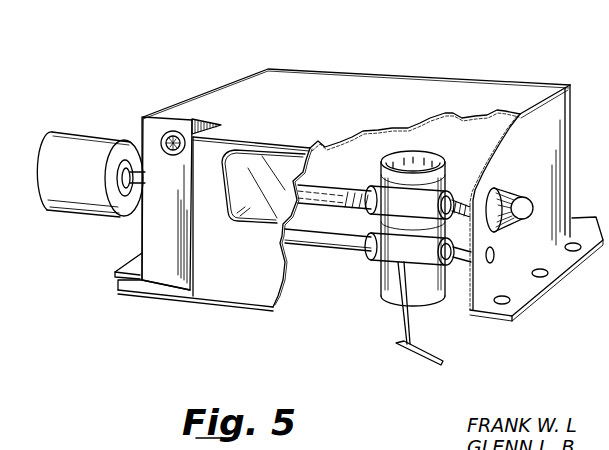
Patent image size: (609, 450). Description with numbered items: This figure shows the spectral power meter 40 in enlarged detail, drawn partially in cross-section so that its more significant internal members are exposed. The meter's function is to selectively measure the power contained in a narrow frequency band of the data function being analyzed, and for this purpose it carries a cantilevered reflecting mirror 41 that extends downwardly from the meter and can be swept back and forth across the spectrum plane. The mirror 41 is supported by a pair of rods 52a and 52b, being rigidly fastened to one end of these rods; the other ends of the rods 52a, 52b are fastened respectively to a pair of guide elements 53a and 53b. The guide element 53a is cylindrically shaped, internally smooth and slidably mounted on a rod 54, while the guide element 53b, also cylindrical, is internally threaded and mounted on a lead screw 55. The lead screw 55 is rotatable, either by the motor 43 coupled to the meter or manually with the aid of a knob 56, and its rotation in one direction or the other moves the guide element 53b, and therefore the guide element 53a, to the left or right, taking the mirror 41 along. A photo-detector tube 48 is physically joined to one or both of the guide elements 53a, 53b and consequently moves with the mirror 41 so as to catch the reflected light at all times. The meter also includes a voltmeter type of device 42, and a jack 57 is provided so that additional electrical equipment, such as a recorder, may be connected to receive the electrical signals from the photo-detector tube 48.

The power meter device 40 is at (462, 79).
The reflecting mirror 41 is at (412, 360).
The voltmeter type of device 42 is at (226, 207).
The motor 43 is at (103, 134).
The photo-detector tube 48 is at (417, 151).
The rod 52a is at (397, 306).
The rod 52b is at (413, 306).
The guide element 53a is at (373, 260).
The guide element 53b is at (449, 195).
The rod 54 is at (309, 247).
The lead screw 55 is at (342, 186).
The knob 56 is at (501, 185).
The jack 57 is at (172, 155).